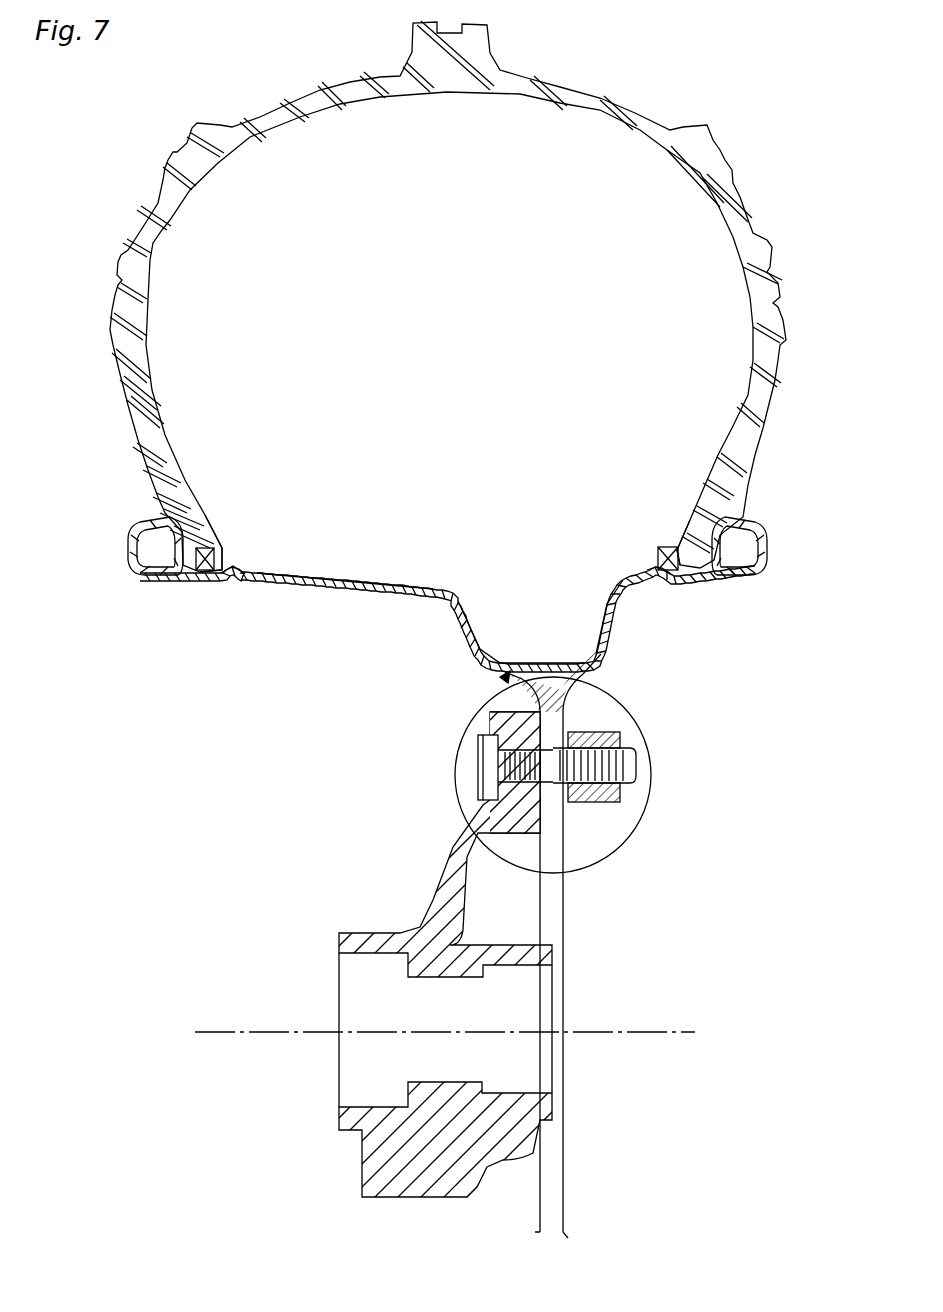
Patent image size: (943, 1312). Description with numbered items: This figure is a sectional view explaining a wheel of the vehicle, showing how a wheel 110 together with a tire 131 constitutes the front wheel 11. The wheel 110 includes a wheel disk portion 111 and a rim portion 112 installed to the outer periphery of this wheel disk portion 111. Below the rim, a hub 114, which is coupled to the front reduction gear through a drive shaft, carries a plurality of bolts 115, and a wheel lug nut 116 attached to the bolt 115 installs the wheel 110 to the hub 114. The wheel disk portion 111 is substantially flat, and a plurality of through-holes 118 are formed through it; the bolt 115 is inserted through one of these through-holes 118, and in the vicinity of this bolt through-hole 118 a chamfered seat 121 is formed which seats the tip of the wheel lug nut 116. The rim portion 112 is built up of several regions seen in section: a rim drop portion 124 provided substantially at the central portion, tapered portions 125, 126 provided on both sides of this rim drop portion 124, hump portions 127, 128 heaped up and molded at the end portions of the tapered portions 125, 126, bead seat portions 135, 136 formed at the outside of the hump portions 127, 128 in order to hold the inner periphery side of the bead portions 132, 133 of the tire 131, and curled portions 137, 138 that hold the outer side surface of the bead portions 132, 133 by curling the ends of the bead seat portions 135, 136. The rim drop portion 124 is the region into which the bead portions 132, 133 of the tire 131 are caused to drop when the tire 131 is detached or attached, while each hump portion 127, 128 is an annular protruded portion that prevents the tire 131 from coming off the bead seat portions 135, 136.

The front wheel 11 is at (405, 296).
The tire 131 is at (147, 227).
The bead portion 132 is at (222, 548).
The bead portion 133 is at (667, 547).
The bead seat portion 135 is at (210, 577).
The bead seat portion 136 is at (680, 583).
The curled portion 137 is at (130, 533).
The curled portion 138 is at (750, 522).
The wheel 110 is at (465, 584).
The rim portion 112 is at (392, 600).
The wheel disk portion 111 is at (568, 1147).
The hub 114 is at (338, 946).
The bolt 115 is at (637, 765).
The wheel lug nut 116 is at (590, 800).
The through-hole 118 is at (478, 777).
The chamfered seat 121 is at (597, 733).
The rim drop portion 124 is at (472, 627).
The tapered portion 125 is at (360, 583).
The tapered portion 126 is at (630, 580).
The hump portion 127 is at (243, 568).
The hump portion 128 is at (657, 567).